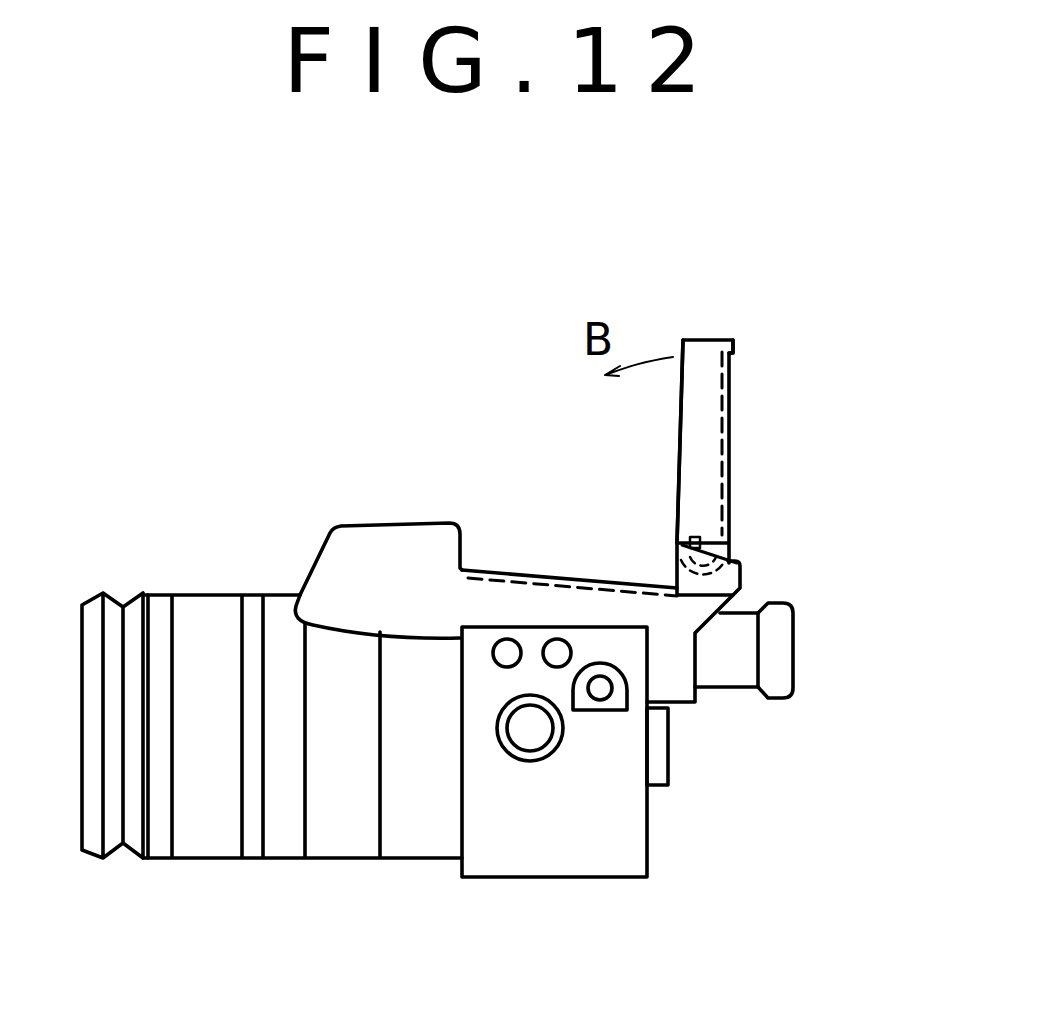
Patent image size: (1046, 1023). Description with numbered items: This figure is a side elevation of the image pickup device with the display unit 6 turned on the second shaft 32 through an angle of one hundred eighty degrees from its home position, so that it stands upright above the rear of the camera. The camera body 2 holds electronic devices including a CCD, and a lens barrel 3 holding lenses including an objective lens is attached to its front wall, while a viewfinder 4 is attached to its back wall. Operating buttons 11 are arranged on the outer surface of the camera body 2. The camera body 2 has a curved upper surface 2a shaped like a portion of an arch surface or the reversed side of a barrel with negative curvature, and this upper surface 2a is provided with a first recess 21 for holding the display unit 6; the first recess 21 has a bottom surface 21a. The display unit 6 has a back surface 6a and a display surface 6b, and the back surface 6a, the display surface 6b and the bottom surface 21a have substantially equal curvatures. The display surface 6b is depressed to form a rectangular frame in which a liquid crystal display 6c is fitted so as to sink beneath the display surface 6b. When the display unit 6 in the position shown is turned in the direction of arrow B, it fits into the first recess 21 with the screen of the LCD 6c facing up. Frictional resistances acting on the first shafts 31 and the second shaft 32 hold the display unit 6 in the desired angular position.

The camera body 2 is at (520, 852).
The upper surface 2a is at (388, 525).
The lens barrel 3 is at (213, 837).
The viewfinder 4 is at (793, 650).
The display unit 6 is at (693, 337).
The back surface 6a is at (675, 405).
The display surface 6b is at (729, 385).
The liquid crystal display (LCD) 6c is at (729, 437).
The operating buttons 11 is at (547, 755).
The first recess 21 is at (465, 545).
The bottom surface 21a is at (562, 577).
The first shafts 31 is at (740, 565).
The second shaft 32 is at (690, 538).